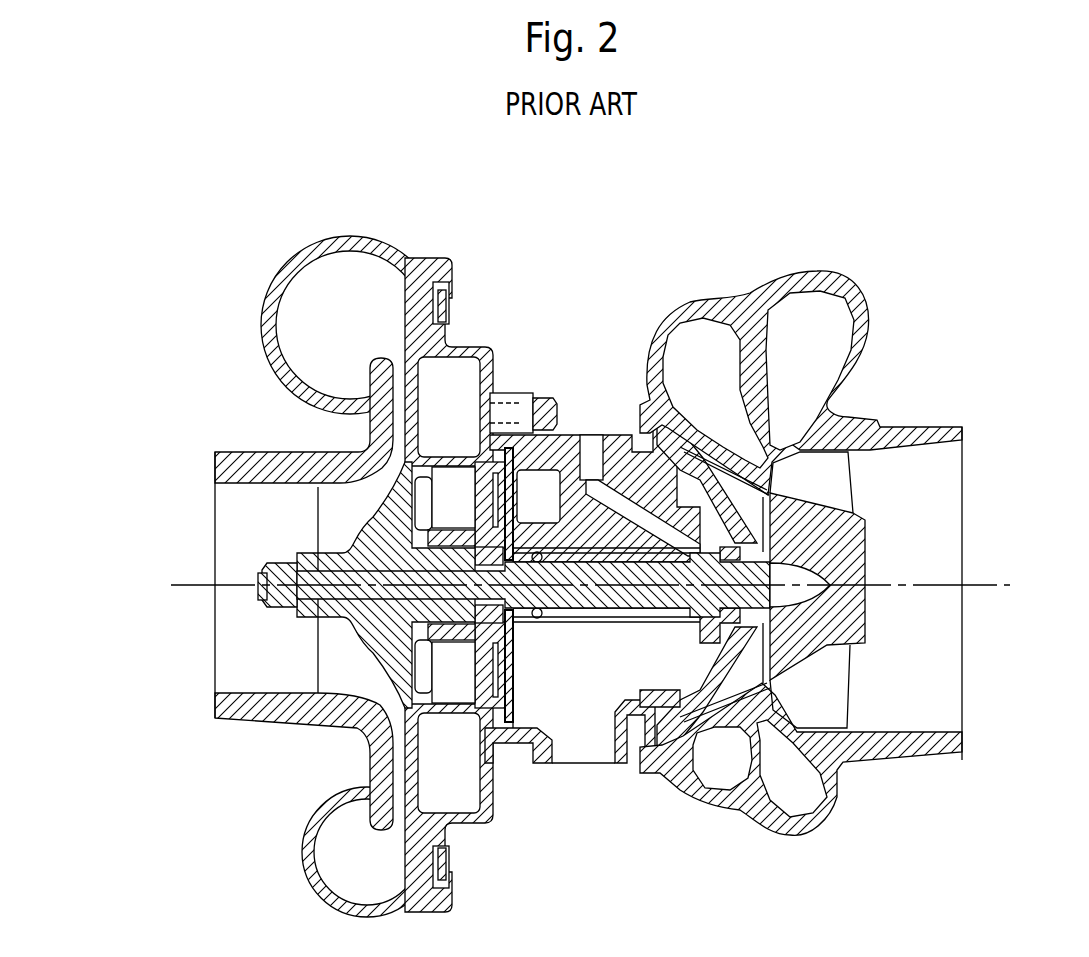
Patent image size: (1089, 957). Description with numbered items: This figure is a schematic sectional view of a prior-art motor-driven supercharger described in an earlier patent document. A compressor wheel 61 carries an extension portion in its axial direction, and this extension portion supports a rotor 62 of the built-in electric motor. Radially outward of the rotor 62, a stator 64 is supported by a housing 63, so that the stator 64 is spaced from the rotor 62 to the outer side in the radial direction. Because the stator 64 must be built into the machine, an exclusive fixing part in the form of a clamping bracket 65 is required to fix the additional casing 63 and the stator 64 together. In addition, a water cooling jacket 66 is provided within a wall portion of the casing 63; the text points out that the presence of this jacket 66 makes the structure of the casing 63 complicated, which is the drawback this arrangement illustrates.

The compressor wheel 61 is at (352, 558).
The rotor 62 is at (498, 652).
The housing 63 is at (450, 447).
The stator 64 is at (523, 452).
The clamping bracket 65 is at (432, 463).
The water cooling jacket 66 is at (457, 375).